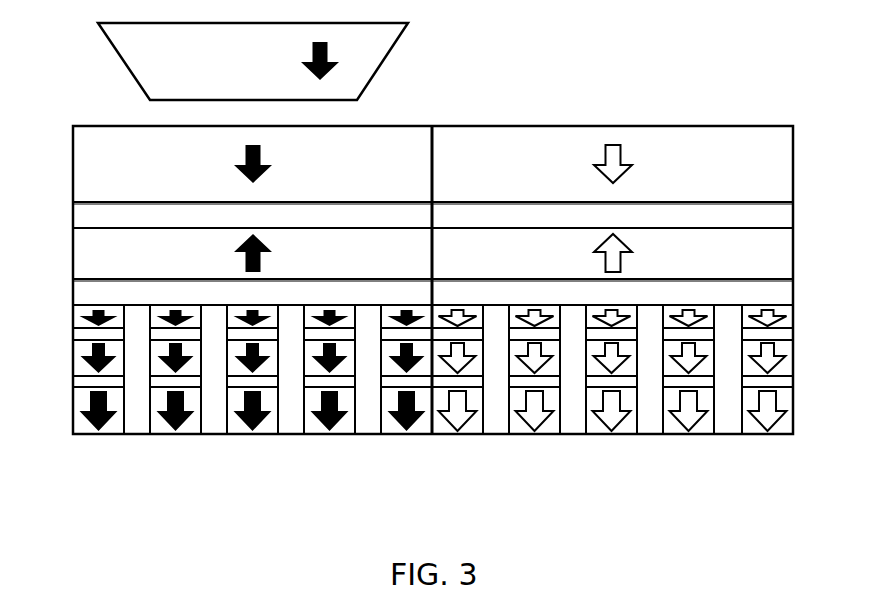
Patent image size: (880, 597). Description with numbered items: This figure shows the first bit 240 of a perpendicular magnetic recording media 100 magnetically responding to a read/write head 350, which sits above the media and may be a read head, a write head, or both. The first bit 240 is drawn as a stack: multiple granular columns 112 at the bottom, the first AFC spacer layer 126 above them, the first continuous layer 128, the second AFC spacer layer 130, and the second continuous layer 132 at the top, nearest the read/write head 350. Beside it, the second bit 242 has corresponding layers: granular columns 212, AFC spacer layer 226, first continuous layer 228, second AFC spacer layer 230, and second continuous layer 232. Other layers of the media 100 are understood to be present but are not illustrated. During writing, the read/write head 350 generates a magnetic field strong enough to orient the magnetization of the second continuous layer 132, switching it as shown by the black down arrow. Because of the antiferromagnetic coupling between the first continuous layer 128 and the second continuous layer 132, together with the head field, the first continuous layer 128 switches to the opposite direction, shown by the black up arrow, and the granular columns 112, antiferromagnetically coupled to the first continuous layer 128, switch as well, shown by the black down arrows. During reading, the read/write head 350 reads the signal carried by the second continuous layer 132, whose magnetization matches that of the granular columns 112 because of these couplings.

The perpendicular magnetic recording media 100 is at (83, 96).
The read/write head 350 is at (253, 61).
The first bit 240 is at (400, 94).
The second bit 242 is at (712, 94).
The second continuous layer 132 is at (187, 164).
The second AFC spacer layer 130 is at (252, 215).
The first continuous layer 128 is at (187, 253).
The first AFC spacer layer 126 is at (252, 291).
The second continuous layer 232 is at (680, 164).
The second AFC spacer layer 230 is at (612, 215).
The first continuous layer 228 is at (680, 253).
The AFC spacer layer 226 is at (612, 291).
The granular columns 112 is at (407, 435).
The granular columns 212 is at (458, 435).